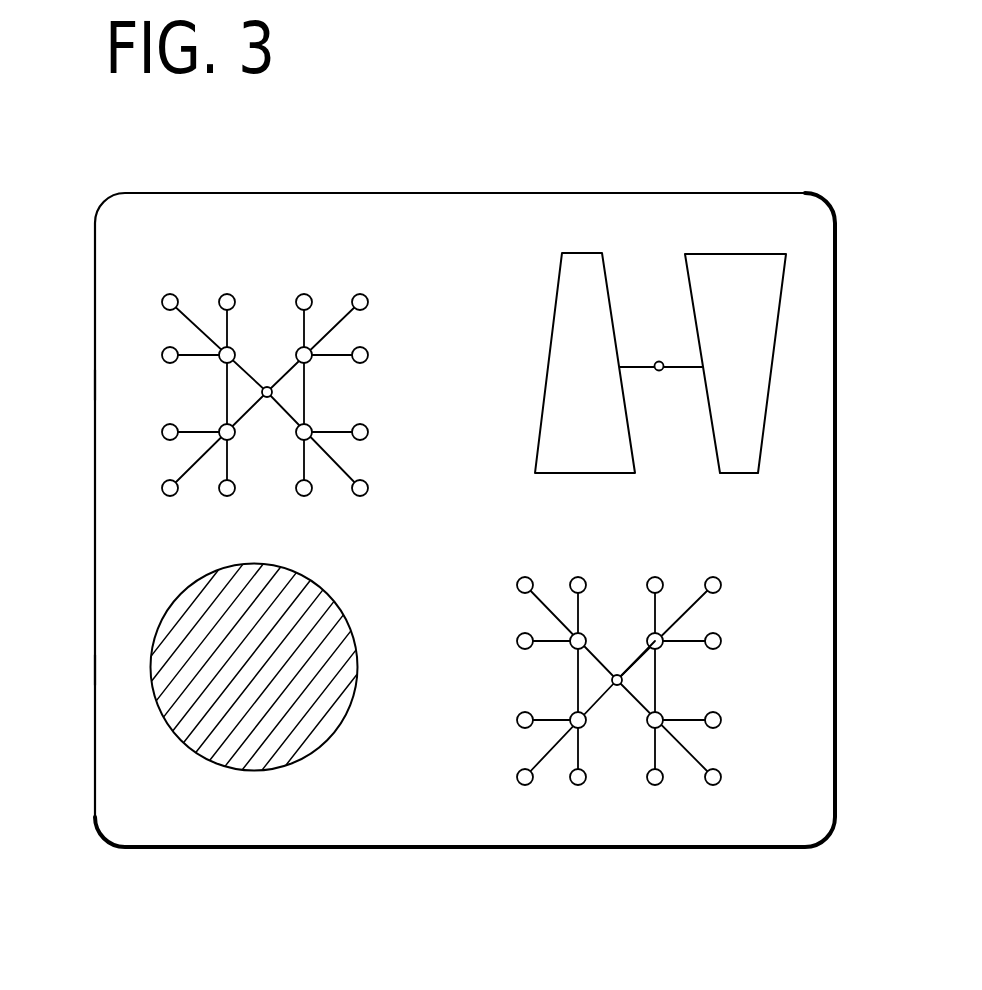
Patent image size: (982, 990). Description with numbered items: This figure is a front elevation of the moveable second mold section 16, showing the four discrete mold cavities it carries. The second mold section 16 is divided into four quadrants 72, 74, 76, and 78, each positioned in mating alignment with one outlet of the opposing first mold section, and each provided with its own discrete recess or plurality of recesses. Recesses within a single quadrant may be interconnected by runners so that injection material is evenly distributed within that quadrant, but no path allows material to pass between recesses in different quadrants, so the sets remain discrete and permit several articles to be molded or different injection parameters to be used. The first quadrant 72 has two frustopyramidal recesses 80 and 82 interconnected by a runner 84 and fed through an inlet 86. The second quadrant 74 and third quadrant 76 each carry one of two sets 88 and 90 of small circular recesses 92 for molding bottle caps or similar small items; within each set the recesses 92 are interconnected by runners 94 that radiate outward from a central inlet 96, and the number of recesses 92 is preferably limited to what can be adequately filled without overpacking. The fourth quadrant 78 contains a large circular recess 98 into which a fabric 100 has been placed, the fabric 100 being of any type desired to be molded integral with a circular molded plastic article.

The second mold section 16 is at (483, 215).
The first quadrant 72 is at (815, 313).
The second quadrant 74 is at (803, 735).
The third quadrant 76 is at (118, 378).
The fourth quadrant 78 is at (118, 667).
The frustopyramidal recess 80 is at (720, 267).
The frustopyramidal recess 82 is at (575, 268).
The runner 84 is at (630, 365).
The inlet 86 is at (662, 372).
The set of small circular recesses 88 is at (641, 657).
The set of small circular recesses 90 is at (266, 281).
The small circular recess 92 is at (711, 586).
The runner 94 is at (638, 662).
The inlet 96 is at (618, 687).
The large circular recess 98 is at (287, 660).
The fabric 100 is at (328, 665).